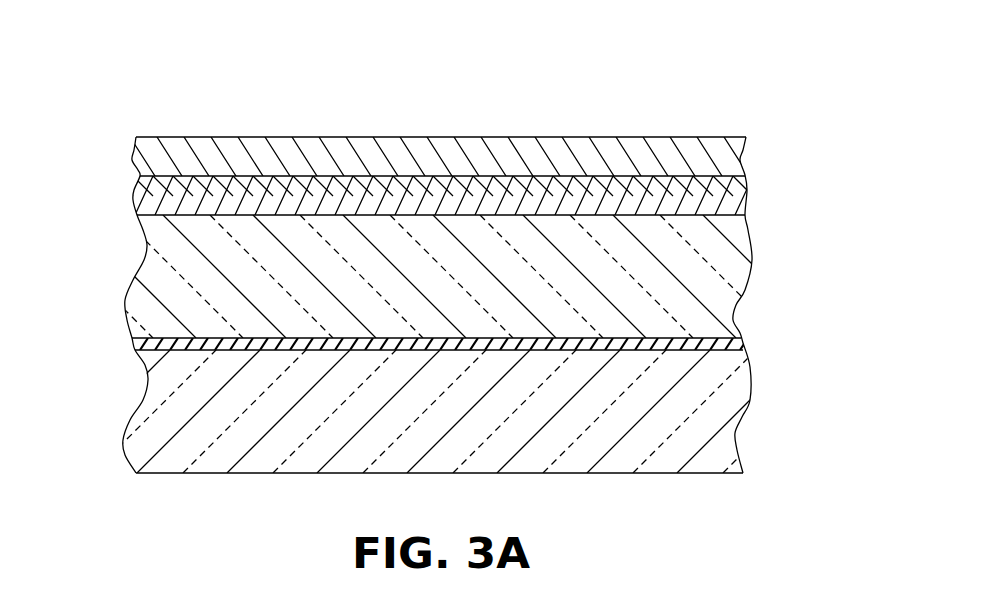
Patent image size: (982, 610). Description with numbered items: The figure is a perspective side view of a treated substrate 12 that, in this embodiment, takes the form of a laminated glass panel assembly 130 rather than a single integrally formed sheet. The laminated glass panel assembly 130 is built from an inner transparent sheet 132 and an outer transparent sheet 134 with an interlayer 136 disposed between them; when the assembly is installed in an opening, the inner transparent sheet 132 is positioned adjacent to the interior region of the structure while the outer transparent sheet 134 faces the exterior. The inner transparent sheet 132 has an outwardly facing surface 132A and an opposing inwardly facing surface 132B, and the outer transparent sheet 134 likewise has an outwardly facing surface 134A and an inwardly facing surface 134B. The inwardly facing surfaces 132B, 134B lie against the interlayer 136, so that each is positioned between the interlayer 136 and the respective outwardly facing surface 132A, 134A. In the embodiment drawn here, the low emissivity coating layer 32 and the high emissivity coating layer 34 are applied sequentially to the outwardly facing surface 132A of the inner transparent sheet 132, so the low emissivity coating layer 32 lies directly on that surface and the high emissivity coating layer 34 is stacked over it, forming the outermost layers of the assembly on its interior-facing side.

The treated substrate 12 is at (728, 90).
The laminated glass panel assembly 130 is at (826, 236).
The high emissivity coating layer 34 is at (140, 158).
The low emissivity coating layer 32 is at (138, 200).
The inner transparent sheet 132 is at (155, 270).
The outwardly facing surface of the inner transparent sheet 132A is at (722, 212).
The inwardly facing surface of the inner transparent sheet 132B is at (715, 353).
The interlayer 136 is at (706, 343).
The outer transparent sheet 134 is at (715, 445).
The outwardly facing surface of the outer transparent sheet 134A is at (172, 474).
The inwardly facing surface of the outer transparent sheet 134B is at (152, 338).